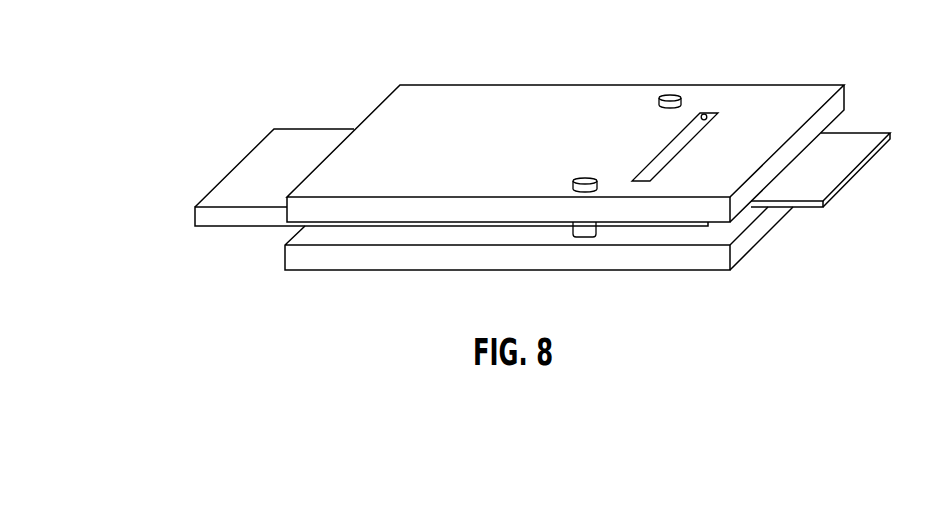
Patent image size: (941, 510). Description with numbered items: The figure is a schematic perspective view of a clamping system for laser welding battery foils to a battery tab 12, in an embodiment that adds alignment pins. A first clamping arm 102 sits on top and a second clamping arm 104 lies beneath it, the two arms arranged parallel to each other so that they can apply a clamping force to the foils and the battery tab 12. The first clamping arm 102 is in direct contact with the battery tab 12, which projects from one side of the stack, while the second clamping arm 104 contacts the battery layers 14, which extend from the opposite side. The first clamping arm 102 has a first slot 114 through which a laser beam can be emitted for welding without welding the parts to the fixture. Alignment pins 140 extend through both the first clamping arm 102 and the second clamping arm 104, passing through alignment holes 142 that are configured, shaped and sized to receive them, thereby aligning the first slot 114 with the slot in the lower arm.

The battery tab 12 is at (852, 148).
The battery layers 14 is at (248, 177).
The first clamping arm 102 is at (447, 112).
The second clamping arm 104 is at (418, 271).
The first slot 114 is at (706, 114).
The alignment pins 140 is at (670, 95).
The alignment holes 142 is at (585, 178).